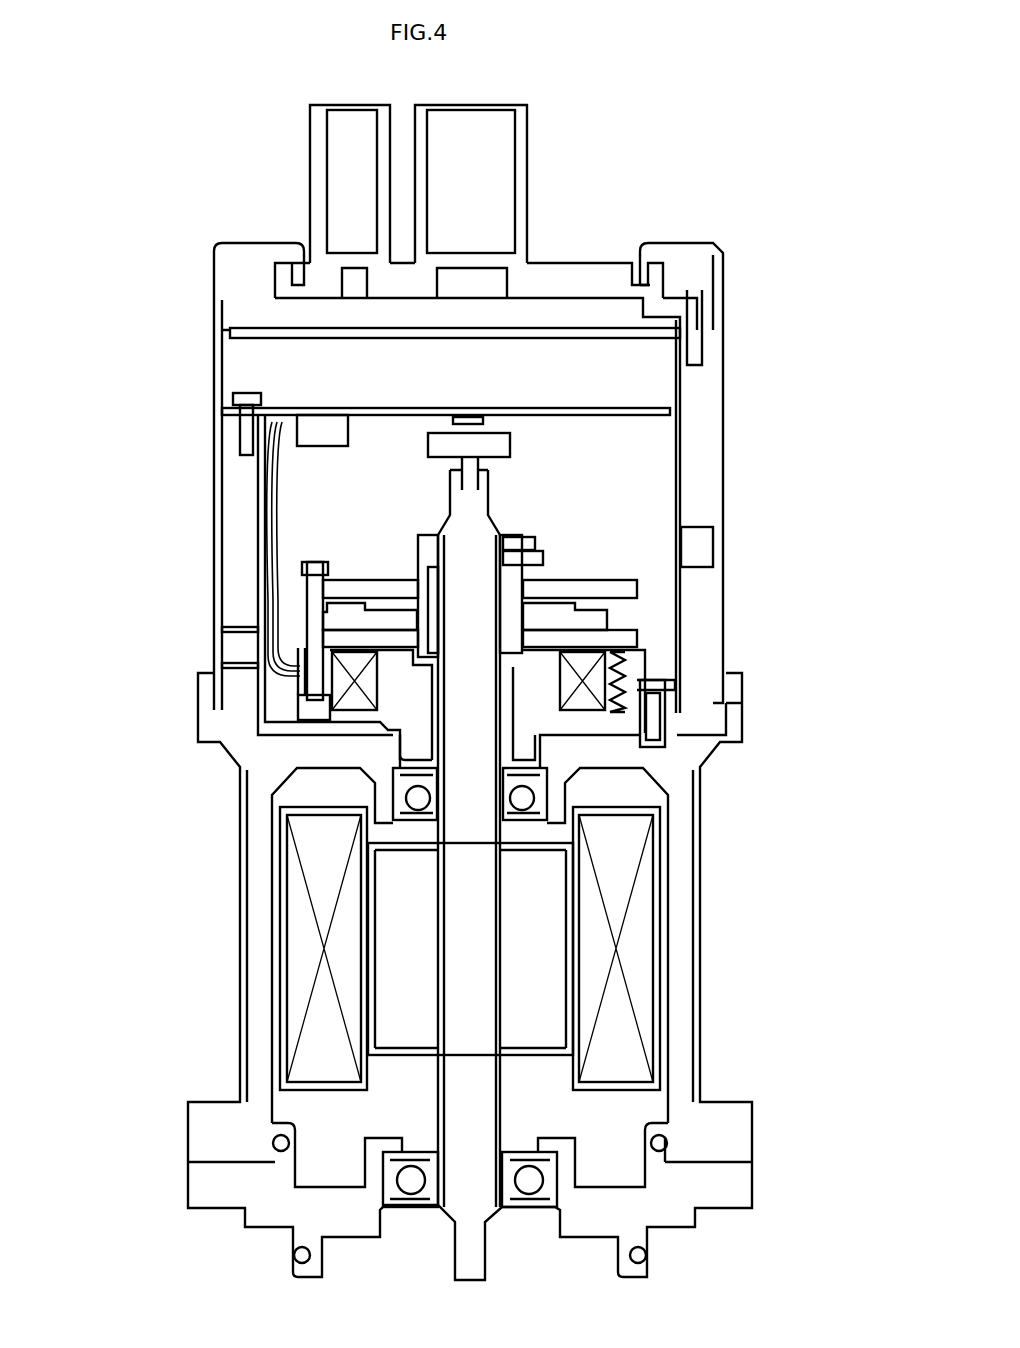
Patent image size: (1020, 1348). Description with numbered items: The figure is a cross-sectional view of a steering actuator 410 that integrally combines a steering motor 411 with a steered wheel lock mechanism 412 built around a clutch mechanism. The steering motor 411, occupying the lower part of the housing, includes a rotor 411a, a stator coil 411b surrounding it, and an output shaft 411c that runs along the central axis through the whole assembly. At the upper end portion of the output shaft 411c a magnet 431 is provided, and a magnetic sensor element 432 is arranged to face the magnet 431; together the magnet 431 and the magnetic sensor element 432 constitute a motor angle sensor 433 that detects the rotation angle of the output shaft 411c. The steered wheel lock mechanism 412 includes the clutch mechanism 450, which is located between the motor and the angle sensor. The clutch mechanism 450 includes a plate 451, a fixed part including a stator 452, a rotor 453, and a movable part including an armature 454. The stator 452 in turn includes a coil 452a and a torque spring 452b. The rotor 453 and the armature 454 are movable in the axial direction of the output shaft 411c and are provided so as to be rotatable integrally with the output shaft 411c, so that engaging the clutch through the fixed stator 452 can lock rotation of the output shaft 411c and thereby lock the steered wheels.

The steering actuator 410 is at (128, 716).
The steering motor 411 is at (183, 946).
The rotor 411a is at (390, 905).
The stator coil 411b is at (285, 1032).
The output shaft 411c is at (480, 940).
The steered wheel lock mechanism 412 is at (285, 548).
The magnet 431 is at (498, 455).
The magnetic sensor element 432 is at (483, 422).
The motor angle sensor 433 is at (620, 428).
The clutch mechanism 450 is at (360, 552).
The plate 451 is at (390, 590).
The stator 452 is at (525, 735).
The coil 452a is at (640, 727).
The torque spring 452b is at (618, 656).
The rotor 453 is at (605, 605).
The armature 454 is at (620, 632).